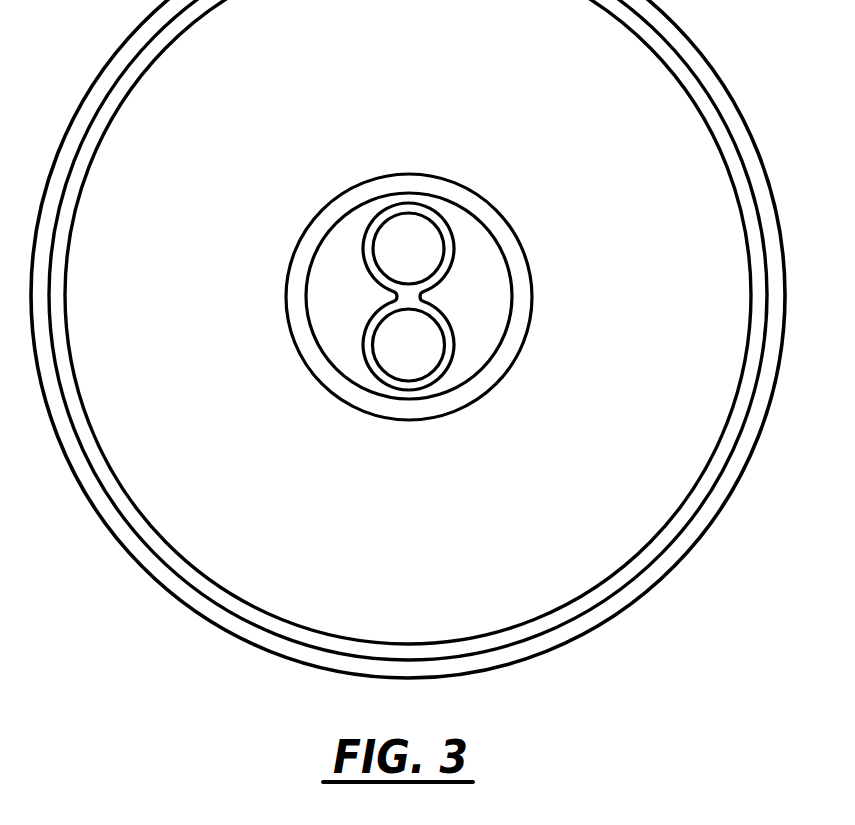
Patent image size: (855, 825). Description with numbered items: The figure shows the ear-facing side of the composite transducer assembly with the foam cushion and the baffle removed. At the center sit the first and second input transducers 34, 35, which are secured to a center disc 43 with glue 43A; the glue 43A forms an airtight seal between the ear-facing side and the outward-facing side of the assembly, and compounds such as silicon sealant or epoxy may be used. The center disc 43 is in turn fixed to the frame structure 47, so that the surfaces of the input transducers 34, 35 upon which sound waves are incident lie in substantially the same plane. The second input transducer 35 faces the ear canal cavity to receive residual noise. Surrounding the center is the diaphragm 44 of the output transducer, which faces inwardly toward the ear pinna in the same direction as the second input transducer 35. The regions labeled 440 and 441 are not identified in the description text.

The first input transducer 34 is at (418, 232).
The second input transducer 35 is at (421, 366).
The center disc 43 is at (488, 276).
The glue 43A is at (415, 208).
The diaphragm 44 is at (669, 475).
The frame structure 47 is at (631, 600).
The inner casing wall 440 is at (335, 637).
The annular space 441 is at (388, 409).